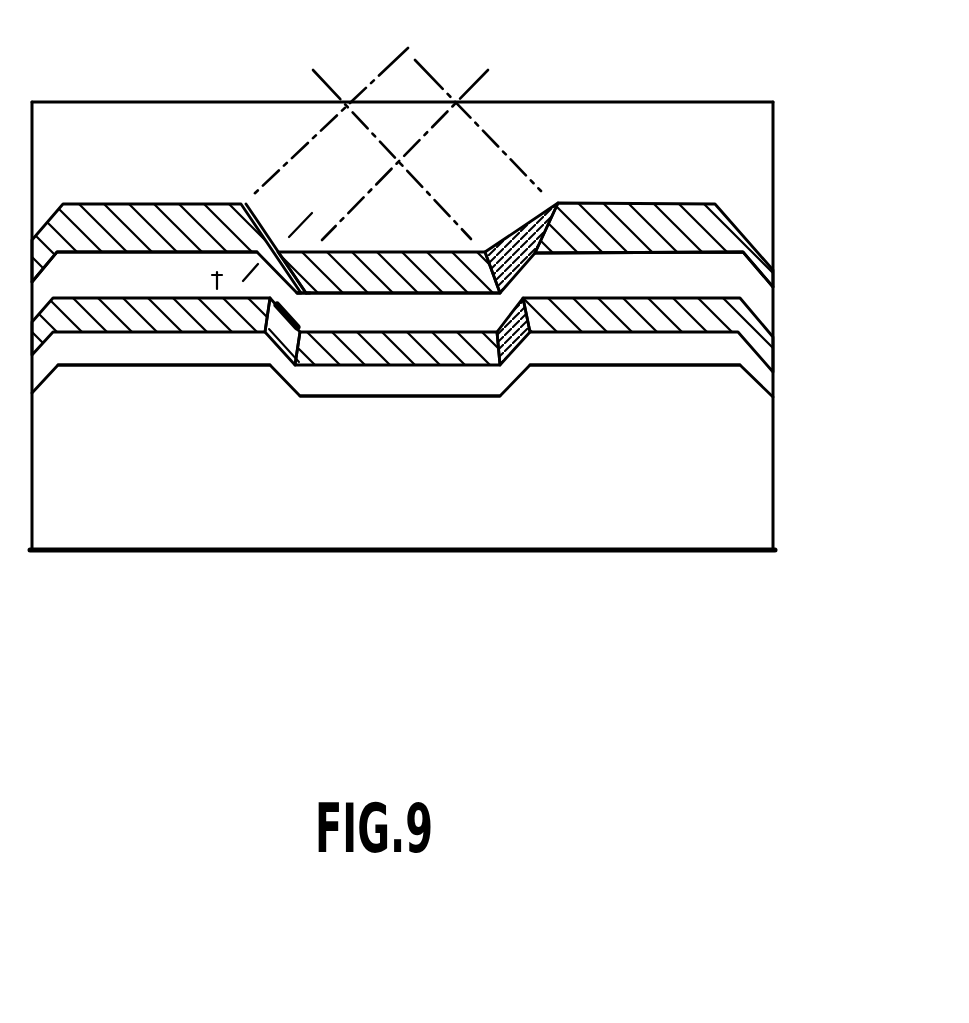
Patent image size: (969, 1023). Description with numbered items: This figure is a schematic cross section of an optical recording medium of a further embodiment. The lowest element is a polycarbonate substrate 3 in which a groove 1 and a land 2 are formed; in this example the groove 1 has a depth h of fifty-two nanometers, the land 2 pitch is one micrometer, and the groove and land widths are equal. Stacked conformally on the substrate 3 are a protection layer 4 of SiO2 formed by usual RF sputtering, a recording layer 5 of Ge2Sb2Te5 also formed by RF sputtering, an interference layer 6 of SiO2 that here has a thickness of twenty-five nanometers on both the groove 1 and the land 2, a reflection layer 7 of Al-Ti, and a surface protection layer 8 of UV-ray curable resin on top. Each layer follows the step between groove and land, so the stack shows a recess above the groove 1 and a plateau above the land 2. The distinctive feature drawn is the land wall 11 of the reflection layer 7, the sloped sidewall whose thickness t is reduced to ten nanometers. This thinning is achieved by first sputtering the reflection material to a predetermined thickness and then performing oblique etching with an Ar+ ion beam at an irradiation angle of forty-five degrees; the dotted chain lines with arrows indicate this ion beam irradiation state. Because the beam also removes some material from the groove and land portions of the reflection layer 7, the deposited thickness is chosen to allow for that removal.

The groove 1 is at (413, 396).
The land 2 is at (157, 367).
The substrate 3 is at (728, 475).
The protection layer 4 is at (758, 378).
The recording layer 5 is at (762, 343).
The interference layer 6 is at (750, 293).
The reflection layer 7 is at (747, 233).
The surface protection layer 8 is at (750, 160).
The land wall 11 is at (282, 245).